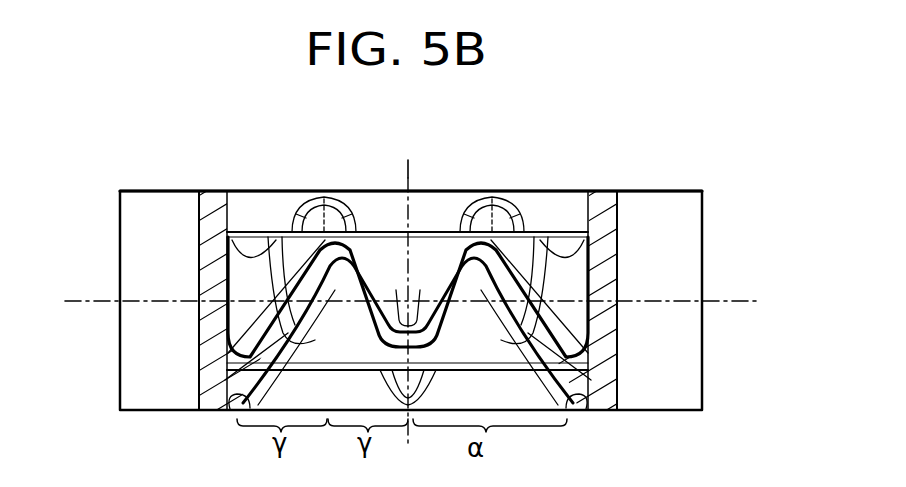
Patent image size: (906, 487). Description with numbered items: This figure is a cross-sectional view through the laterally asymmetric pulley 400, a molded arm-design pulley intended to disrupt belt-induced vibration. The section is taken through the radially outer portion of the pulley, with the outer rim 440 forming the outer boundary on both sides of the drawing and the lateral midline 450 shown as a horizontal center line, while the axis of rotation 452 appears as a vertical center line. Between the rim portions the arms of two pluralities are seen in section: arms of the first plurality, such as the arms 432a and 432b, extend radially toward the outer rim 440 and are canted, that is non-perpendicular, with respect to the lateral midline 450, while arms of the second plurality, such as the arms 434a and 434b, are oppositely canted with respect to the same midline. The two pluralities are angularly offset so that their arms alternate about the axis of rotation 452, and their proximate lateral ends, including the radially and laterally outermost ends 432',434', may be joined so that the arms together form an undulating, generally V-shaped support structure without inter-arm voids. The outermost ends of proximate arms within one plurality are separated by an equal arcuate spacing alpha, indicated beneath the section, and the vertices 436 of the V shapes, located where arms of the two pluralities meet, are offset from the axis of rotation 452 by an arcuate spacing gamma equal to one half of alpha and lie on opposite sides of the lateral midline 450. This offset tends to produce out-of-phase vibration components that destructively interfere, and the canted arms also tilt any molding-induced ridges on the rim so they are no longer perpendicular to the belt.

The laterally asymmetric pulley 400 is at (98, 194).
The outer rim 440 is at (600, 200).
The lateral midline 450 is at (436, 300).
The axis of rotation 452 is at (387, 298).
The arm of the second plurality of arms 434b is at (297, 285).
The arm of the second plurality of arms 434a is at (453, 267).
The arm of the first plurality of arms 432b is at (360, 285).
The arm of the first plurality of arms 432a is at (520, 262).
The lateral ends of the arms 432',434' is at (245, 421).
The vertices of V shapes 436 is at (583, 412).